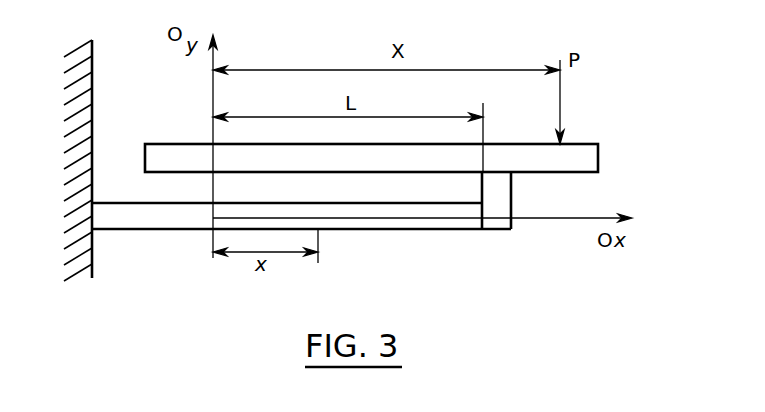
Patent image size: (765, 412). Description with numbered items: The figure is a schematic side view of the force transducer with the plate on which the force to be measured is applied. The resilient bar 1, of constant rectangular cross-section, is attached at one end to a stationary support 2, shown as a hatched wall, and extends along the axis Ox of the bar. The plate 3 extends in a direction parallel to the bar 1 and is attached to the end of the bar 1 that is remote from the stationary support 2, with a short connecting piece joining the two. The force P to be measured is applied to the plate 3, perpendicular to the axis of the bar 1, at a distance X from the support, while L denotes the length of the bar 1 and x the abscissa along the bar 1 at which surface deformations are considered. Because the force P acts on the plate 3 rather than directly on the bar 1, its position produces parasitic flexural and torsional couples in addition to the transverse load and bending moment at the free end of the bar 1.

The resilient bar 1 is at (393, 231).
The stationary support 2 is at (93, 92).
The plate 3 is at (365, 158).